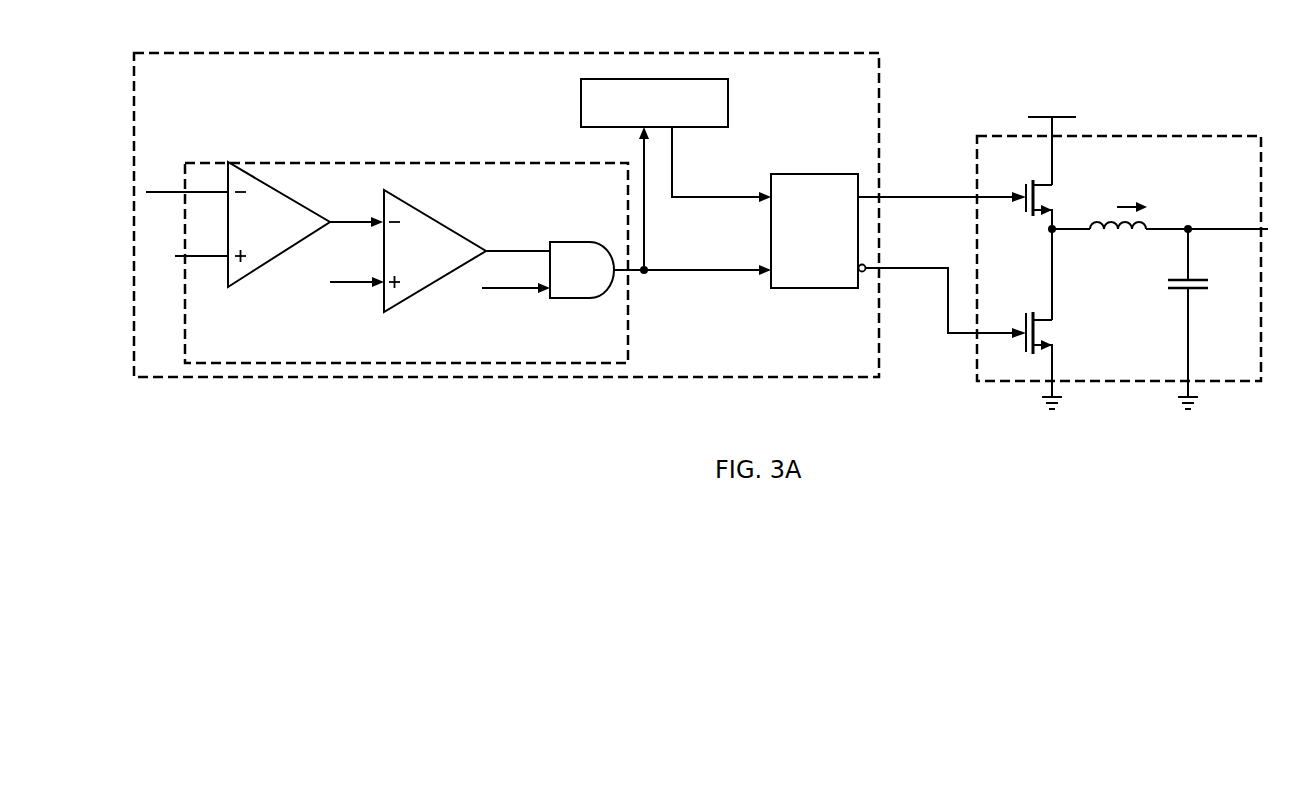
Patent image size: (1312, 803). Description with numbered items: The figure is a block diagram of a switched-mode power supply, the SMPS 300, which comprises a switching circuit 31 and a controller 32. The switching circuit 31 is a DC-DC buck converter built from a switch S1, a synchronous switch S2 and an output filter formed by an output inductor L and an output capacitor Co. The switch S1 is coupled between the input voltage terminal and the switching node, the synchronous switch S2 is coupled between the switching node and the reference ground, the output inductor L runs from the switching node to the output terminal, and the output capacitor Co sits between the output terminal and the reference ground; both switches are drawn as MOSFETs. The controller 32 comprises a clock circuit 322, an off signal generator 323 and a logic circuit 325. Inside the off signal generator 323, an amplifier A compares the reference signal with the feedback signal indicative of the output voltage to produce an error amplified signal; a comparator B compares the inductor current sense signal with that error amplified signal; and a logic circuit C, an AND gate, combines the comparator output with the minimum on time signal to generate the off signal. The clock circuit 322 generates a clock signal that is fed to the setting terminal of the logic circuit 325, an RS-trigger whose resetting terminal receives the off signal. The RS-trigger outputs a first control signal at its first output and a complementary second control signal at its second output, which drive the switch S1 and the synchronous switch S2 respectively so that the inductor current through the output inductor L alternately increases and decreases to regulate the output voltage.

The SMPS 300 is at (1237, 60).
The controller 32 is at (879, 95).
The switching circuit 31 is at (1225, 136).
The clock circuit 322 is at (728, 87).
The off signal generator 323 is at (628, 358).
The logic circuit 325 is at (803, 289).
The amplifier A is at (254, 271).
The comparator B is at (425, 210).
The logic circuit C is at (573, 298).
The switch S1 is at (1057, 204).
The synchronous switch S2 is at (1056, 354).
The output inductor L is at (1099, 239).
The output capacitor Co is at (1200, 313).